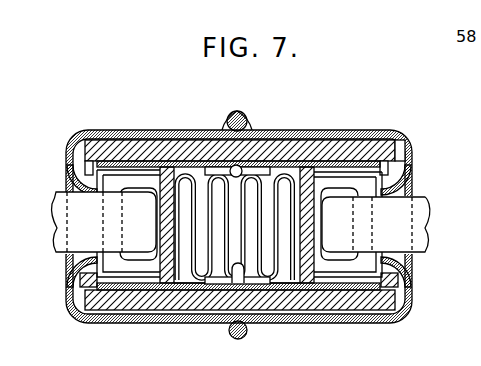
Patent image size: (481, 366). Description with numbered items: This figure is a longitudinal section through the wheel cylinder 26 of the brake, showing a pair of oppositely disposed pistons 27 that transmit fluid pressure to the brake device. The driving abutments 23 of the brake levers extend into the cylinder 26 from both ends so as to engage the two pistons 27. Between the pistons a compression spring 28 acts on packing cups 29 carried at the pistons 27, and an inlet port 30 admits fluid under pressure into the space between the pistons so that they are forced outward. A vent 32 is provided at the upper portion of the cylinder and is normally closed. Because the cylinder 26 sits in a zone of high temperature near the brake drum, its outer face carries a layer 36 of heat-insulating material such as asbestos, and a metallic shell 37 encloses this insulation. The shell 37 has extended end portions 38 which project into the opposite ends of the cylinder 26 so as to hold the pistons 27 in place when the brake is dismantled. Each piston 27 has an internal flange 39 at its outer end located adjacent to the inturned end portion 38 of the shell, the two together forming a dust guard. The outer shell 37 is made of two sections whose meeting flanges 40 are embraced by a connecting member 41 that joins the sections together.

The driving abutment 23 is at (75, 211).
The wheel cylinder 26 is at (400, 150).
The piston 27 is at (128, 292).
The compression spring 28 is at (268, 282).
The packing cup 29 is at (197, 285).
The inlet port 30 is at (240, 284).
The vent 32 is at (233, 167).
The layer of heat-insulating material 36 is at (315, 139).
The metallic shell 37 is at (100, 134).
The extended end portion 38 is at (70, 262).
The internal flange 39 is at (103, 270).
The meeting flange 40 is at (229, 124).
The connecting member 41 is at (237, 111).